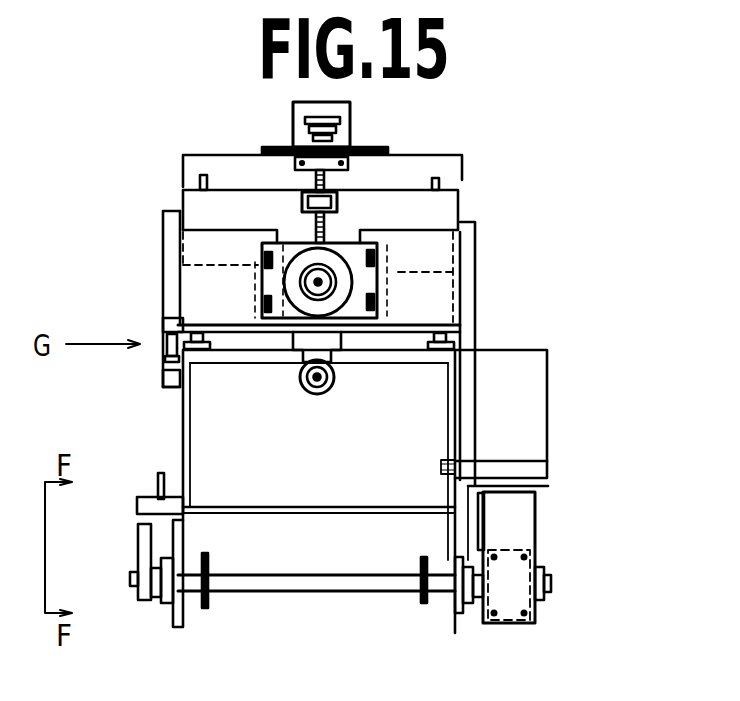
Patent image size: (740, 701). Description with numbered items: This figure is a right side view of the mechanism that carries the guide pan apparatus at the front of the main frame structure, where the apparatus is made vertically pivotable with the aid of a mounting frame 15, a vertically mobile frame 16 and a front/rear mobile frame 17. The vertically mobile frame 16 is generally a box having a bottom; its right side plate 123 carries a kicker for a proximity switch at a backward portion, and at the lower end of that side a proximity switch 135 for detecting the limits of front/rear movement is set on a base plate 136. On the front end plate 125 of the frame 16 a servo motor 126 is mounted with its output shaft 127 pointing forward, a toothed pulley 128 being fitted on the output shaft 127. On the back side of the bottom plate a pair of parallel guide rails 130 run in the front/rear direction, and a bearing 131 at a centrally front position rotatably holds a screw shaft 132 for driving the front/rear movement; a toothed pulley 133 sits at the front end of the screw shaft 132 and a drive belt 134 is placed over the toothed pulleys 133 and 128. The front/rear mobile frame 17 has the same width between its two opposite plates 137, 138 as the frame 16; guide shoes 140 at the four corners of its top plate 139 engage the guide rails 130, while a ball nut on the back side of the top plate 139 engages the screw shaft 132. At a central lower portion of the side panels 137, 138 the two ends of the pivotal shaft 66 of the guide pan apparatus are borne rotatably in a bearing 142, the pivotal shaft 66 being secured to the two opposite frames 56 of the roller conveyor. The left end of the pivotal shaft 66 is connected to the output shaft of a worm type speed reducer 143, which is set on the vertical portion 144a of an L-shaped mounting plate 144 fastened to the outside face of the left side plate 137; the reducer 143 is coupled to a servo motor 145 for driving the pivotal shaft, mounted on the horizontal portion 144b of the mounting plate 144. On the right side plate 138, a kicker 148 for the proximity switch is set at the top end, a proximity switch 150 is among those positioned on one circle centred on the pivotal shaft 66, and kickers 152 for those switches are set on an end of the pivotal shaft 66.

The mounting frame 15 is at (428, 153).
The vertically mobile frame 16 is at (425, 224).
The front/rear mobile frame 17 is at (430, 405).
The frames 56 is at (210, 600).
The pivotal shaft 66 is at (330, 594).
The right side plate 123 is at (180, 212).
The front end plate 125 is at (230, 253).
The servo motor 126 is at (347, 247).
The output shaft 127 is at (348, 268).
The toothed pulley 128 is at (333, 281).
The guide rails 130 is at (178, 320).
The bearing 131 is at (296, 360).
The screw shaft 132 is at (310, 391).
The toothed pulley 133 is at (332, 386).
The drive belt 134 is at (265, 310).
The proximity switch 135 is at (166, 344).
The base plate 136 is at (176, 330).
The left side plate 137 is at (486, 422).
The right side plate 138 is at (178, 628).
The top plate 139 is at (220, 337).
The guide shoes 140 is at (196, 351).
The bearing 142 is at (163, 603).
The worm type speed reducer 143 is at (540, 573).
The L-shaped mounting plate 144 is at (540, 494).
The vertical portion 144a is at (508, 530).
The horizontal portion 144b is at (556, 462).
The servo motor 145 is at (510, 447).
The kicker 148 is at (163, 375).
The proximity switch 150 is at (143, 506).
The kickers 152 is at (138, 565).